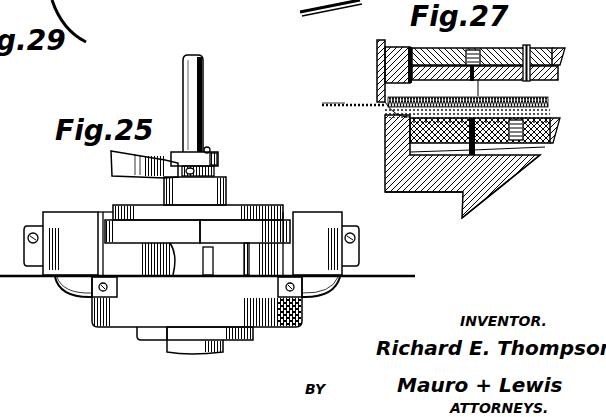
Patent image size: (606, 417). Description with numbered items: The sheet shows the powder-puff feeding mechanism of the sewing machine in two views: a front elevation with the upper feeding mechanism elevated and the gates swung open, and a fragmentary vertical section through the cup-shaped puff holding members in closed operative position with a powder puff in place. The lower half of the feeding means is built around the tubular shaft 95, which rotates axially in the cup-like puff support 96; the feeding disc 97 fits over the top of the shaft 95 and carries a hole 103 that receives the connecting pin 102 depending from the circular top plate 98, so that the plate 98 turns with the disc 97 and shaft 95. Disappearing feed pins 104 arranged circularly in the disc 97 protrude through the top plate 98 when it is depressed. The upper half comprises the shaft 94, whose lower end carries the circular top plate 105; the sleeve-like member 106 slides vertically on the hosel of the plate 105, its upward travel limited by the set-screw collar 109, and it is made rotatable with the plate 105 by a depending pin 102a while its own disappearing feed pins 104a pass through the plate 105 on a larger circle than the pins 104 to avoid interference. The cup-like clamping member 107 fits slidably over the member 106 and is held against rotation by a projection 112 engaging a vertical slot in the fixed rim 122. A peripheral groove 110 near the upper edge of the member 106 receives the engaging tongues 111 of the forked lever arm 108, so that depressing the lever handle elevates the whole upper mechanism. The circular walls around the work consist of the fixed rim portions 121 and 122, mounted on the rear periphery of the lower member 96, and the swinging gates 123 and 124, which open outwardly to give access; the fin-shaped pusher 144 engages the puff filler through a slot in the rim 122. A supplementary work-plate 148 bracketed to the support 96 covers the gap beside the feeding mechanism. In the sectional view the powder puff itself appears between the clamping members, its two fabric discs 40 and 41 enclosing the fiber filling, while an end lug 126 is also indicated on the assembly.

In FIG. 25, the shaft 94 is at (203, 115).
In FIG. 25, the set-screw collar 109 is at (208, 150).
In FIG. 25, the sleeve-like member 106 is at (218, 160).
In FIG. 27, the sleeve-like member 106 is at (408, 51).
In FIG. 25, the peripheral groove 110 is at (215, 172).
In FIG. 25, the engaging tongues 111 is at (195, 191).
In FIG. 25, the lever arm 108 is at (110, 162).
In FIG. 25, the cup-like clamping member 107 is at (250, 208).
In FIG. 27, the cup-like clamping member 107 is at (396, 61).
In FIG. 25, the fixed rim portion 121 is at (158, 250).
In FIG. 25, the fixed rim portion 122 is at (200, 252).
In FIG. 25, the swinging rim portion 124 is at (78, 212).
In FIG. 27, the swinging rim portion 124 is at (378, 53).
In FIG. 25, the swinging rim portion 123 is at (305, 220).
In FIG. 25, the end lug 126 is at (350, 256).
In FIG. 25, the pusher member 144 is at (205, 250).
In FIG. 25, the projection 112 is at (243, 268).
In FIG. 25, the cup-like puff support 96 is at (158, 340).
In FIG. 27, the cup-like puff support 96 is at (408, 120).
In FIG. 25, the shaft 95 is at (225, 347).
In FIG. 27, the circular top plate 105 is at (380, 94).
In FIG. 27, the supplementary work-plate 148 is at (340, 102).
In FIG. 27, the circular top plate 98 is at (548, 112).
In FIG. 27, the depending pin 102a is at (538, 41).
In FIG. 27, the circular disc 40 is at (545, 50).
In FIG. 27, the disappearing feed pins 104a is at (479, 91).
In FIG. 27, the circular disc 41 is at (546, 145).
In FIG. 27, the disappearing feed pins 104 is at (390, 135).
In FIG. 27, the hole 103 is at (400, 160).
In FIG. 27, the connecting pin 102 is at (450, 192).
In FIG. 27, the feeding disc 97 is at (492, 157).